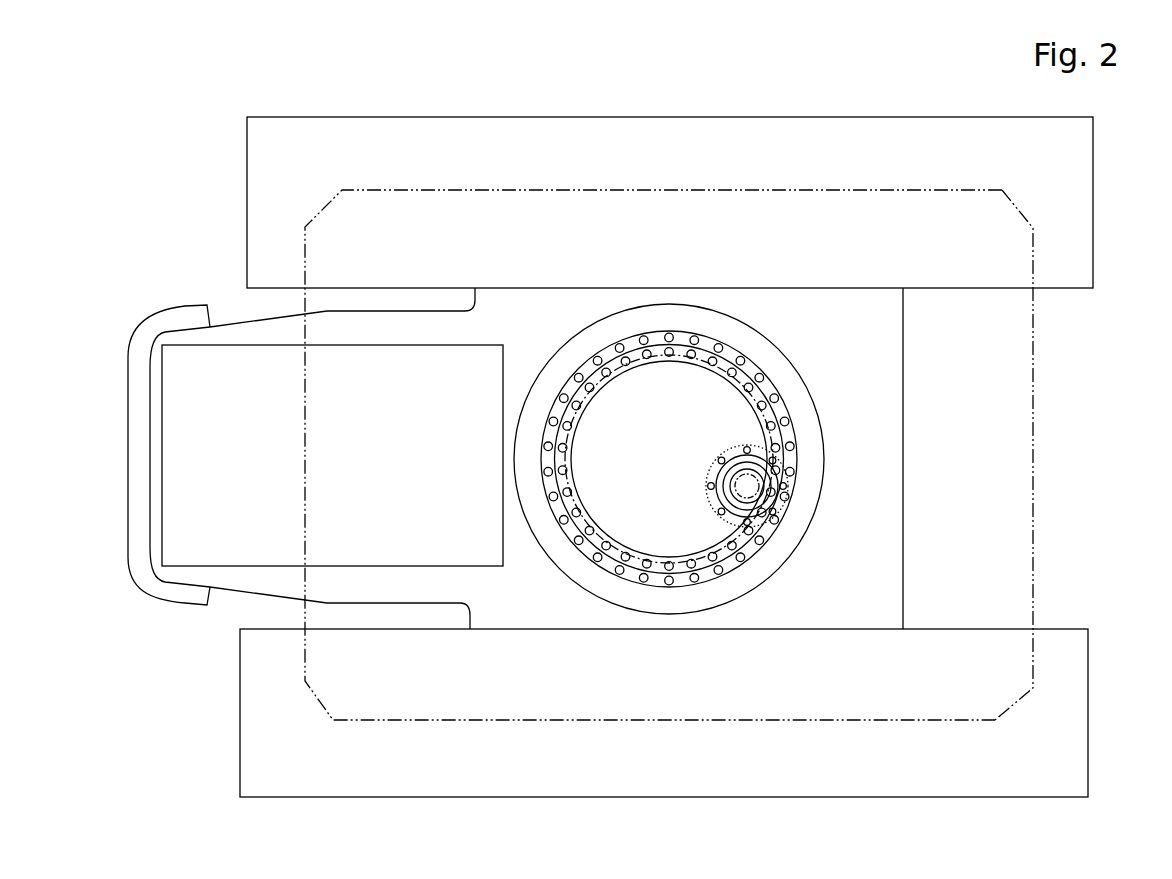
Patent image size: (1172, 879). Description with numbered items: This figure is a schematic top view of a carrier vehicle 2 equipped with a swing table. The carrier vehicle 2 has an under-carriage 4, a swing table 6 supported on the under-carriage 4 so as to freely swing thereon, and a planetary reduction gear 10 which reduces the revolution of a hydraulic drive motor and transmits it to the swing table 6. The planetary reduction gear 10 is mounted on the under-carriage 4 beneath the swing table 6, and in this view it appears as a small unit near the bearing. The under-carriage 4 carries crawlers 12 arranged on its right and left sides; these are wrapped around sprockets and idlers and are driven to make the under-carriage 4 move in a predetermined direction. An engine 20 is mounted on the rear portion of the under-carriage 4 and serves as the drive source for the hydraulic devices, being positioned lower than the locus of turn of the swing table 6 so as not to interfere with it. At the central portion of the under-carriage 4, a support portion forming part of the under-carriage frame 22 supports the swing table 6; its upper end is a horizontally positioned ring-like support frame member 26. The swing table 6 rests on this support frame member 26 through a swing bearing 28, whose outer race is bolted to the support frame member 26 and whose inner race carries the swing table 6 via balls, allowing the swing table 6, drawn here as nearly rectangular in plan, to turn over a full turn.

The carrier vehicle 2 is at (1068, 375).
The under-carriage 4 is at (748, 190).
The swing table 6 is at (905, 190).
The planetary reduction gear 10 is at (712, 475).
The crawlers 12 is at (477, 117).
The engine 20 is at (236, 566).
The under-carriage frame 22 is at (241, 323).
The support frame member 26 is at (805, 420).
The swing bearing 28 is at (762, 372).